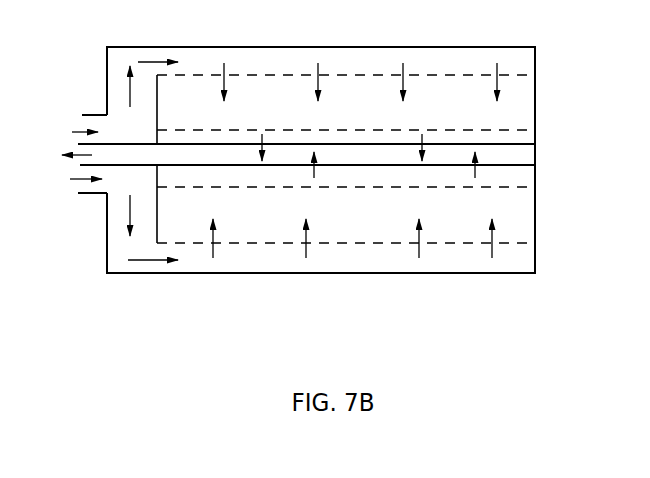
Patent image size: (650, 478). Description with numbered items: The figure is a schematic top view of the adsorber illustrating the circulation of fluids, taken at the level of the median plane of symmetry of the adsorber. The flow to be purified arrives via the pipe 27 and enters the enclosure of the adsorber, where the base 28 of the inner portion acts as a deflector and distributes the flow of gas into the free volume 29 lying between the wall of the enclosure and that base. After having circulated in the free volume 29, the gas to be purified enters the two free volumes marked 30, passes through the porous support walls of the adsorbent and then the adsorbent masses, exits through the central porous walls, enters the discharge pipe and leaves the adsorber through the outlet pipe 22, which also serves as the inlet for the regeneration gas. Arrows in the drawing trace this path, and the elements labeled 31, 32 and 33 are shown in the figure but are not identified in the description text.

The outlet pipe of the purified gas 22 is at (88, 160).
The pipe 27 is at (92, 114).
The base of the inner portion 28 is at (157, 225).
The free volume 29 is at (116, 87).
The free volumes 30 is at (288, 258).
The air flow through filter 31 is at (500, 82).
The plenum 32 is at (520, 115).
The filter media 33 is at (364, 77).